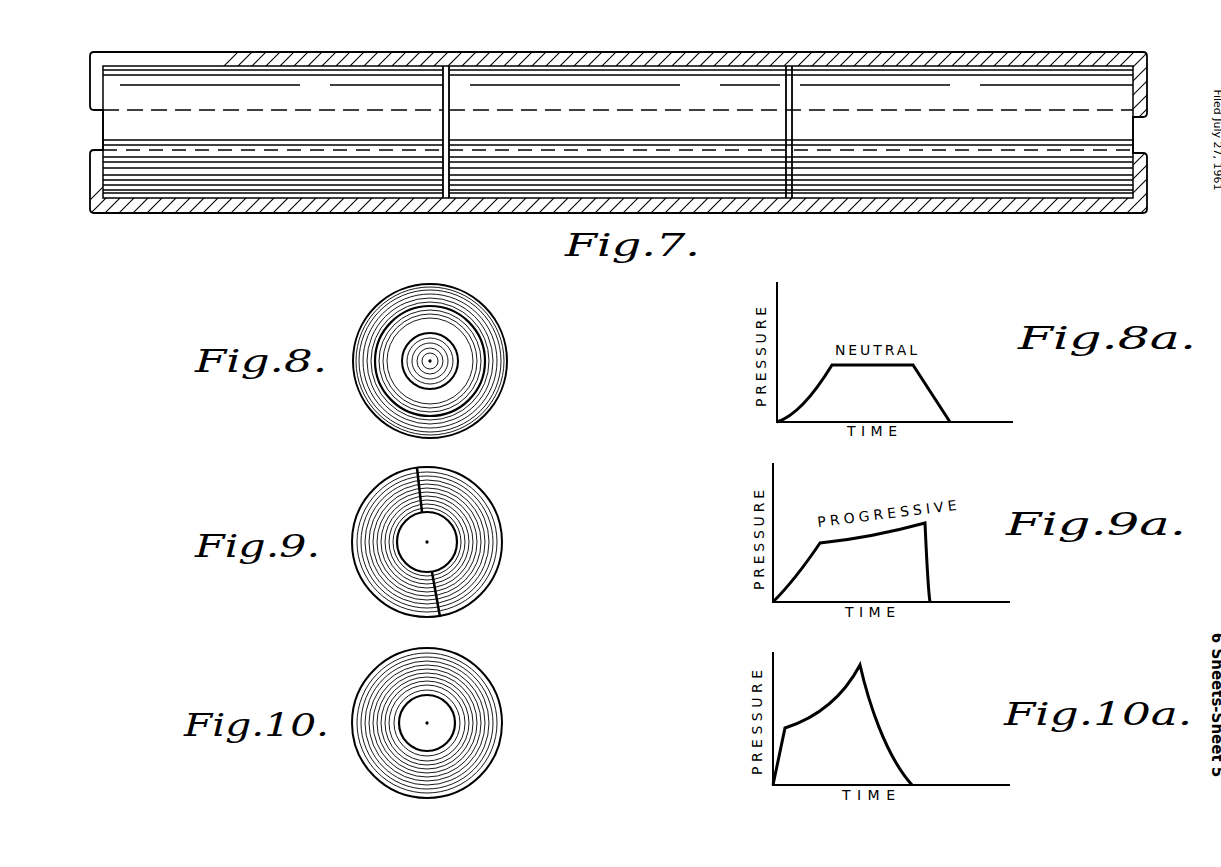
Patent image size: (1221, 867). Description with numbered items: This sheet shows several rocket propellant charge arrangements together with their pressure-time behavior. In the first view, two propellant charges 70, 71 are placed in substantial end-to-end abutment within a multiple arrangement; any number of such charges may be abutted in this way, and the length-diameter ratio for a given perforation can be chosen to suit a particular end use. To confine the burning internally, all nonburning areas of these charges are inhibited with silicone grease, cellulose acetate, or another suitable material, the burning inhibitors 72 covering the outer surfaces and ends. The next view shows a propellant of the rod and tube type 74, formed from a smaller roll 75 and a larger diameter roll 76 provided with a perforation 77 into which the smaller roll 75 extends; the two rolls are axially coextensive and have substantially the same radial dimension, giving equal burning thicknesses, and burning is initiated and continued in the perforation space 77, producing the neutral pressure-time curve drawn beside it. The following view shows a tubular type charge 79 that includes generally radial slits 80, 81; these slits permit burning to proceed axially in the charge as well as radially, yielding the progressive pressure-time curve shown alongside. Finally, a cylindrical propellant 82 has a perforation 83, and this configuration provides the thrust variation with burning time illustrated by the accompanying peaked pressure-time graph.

In FIG. 7, the charge 70 is at (276, 132).
In FIG. 7, the charge 71 is at (791, 132).
In FIG. 7, the burning inhibitors 72 is at (263, 53).
In FIG. 8, the propellant of the rod and tube type 74 is at (376, 306).
In FIG. 8, the smaller roll 75 is at (440, 370).
In FIG. 8, the larger diameter roll 76 is at (493, 348).
In FIG. 8, the perforation 77 is at (458, 333).
In FIG. 9, the tubular type charge 79 is at (507, 539).
In FIG. 9, the radial slit 80 is at (420, 477).
In FIG. 9, the radial slit 81 is at (443, 600).
In FIG. 10, the cylindrical propellant 82 is at (490, 704).
In FIG. 10, the perforation 83 is at (437, 747).